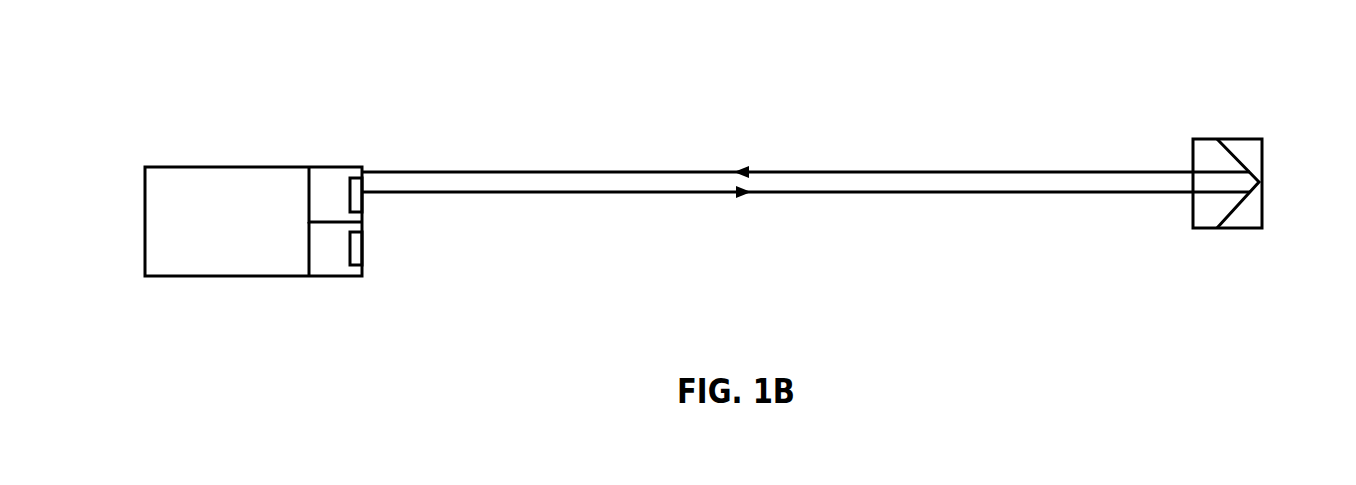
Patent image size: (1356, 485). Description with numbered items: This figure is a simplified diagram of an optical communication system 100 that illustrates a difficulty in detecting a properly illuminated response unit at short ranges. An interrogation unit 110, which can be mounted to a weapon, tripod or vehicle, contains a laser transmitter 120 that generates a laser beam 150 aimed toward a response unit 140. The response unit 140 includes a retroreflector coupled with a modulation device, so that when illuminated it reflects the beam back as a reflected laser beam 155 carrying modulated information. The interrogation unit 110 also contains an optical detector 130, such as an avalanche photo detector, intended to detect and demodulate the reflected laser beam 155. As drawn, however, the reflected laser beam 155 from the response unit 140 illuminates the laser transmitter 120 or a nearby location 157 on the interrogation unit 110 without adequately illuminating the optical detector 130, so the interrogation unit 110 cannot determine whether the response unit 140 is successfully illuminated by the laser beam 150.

The optical communication system 100 is at (170, 78).
The interrogation unit 110 is at (163, 277).
The laser transmitter 120 is at (328, 166).
The optical detector 130 is at (330, 277).
The response unit 140 is at (1262, 165).
The laser beam 150 is at (797, 194).
The reflected laser beam 155 is at (797, 170).
The nearby location 157 is at (367, 169).